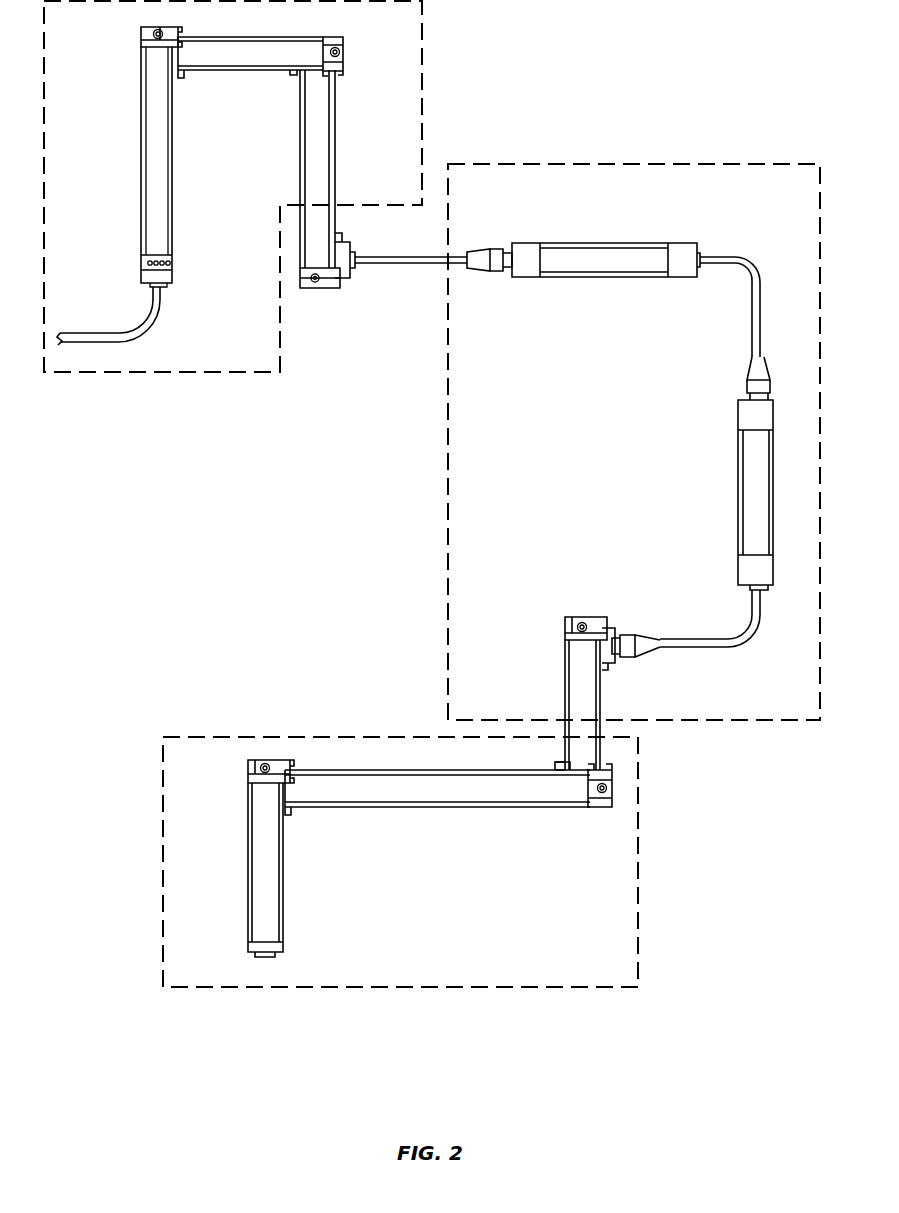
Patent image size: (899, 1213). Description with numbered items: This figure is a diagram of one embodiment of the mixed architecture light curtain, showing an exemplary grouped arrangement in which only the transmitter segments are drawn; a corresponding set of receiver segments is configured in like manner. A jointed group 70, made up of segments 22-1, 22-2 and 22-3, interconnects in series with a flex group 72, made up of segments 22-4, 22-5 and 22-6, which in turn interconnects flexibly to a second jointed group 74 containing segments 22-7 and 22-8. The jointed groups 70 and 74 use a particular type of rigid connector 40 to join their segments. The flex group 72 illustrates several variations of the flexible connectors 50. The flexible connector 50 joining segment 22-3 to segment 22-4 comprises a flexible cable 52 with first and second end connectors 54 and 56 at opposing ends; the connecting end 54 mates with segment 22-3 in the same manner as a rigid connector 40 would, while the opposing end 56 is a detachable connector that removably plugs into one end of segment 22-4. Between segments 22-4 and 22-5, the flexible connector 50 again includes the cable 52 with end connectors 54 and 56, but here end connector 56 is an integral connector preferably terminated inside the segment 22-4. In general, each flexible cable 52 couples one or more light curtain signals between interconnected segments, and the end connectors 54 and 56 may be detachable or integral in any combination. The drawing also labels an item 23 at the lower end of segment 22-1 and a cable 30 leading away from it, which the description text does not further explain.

The transmitter segment 22-1 is at (172, 183).
The transmitter segment 22-2 is at (270, 71).
The transmitter segment 22-3 is at (335, 125).
The transmitter segment 22-4 is at (560, 278).
The transmitter segment 22-5 is at (738, 483).
The transmitter segment 22-6 is at (565, 672).
The transmitter segment 22-7 is at (435, 808).
The transmitter segment 22-8 is at (283, 893).
The indicator LEDs 23 is at (172, 268).
The cable to controller 30 is at (150, 328).
The rigid connector 40 is at (136, 37).
The flexible connector 50 is at (424, 272).
The flexible cable 52 is at (400, 256).
The first end connector 54 is at (358, 287).
The second end connector 56 is at (492, 240).
The jointed group 70 is at (422, 66).
The flex group 72 is at (448, 433).
The second jointed group 74 is at (272, 737).